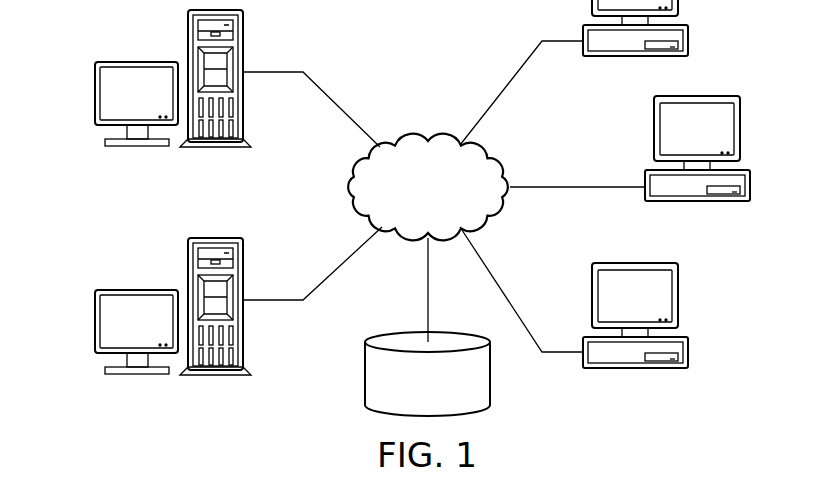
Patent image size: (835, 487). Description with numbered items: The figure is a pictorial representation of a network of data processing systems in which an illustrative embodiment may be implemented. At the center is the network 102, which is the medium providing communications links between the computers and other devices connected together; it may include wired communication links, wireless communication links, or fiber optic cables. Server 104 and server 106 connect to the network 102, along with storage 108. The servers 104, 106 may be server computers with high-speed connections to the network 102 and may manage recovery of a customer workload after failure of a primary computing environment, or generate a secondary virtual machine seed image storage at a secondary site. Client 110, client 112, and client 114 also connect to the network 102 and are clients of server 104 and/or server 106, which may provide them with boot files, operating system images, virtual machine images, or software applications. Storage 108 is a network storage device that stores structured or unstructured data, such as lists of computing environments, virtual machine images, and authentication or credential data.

The network 102 is at (404, 138).
The server 104 is at (95, 93).
The server 106 is at (93, 322).
The storage 108 is at (365, 372).
The client 110 is at (688, 32).
The client 112 is at (752, 195).
The client 114 is at (688, 360).